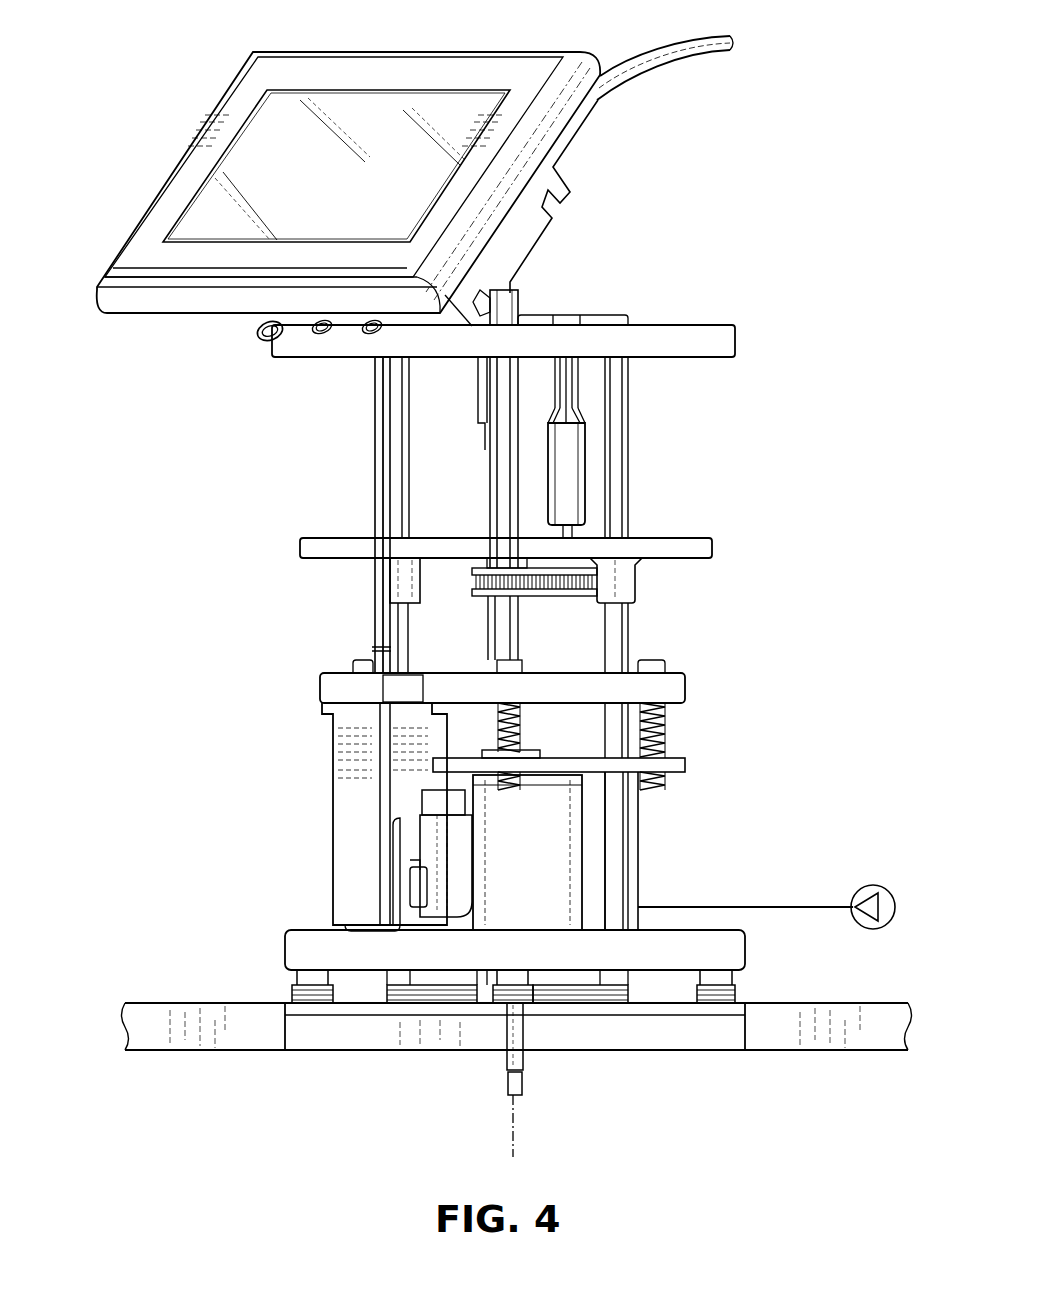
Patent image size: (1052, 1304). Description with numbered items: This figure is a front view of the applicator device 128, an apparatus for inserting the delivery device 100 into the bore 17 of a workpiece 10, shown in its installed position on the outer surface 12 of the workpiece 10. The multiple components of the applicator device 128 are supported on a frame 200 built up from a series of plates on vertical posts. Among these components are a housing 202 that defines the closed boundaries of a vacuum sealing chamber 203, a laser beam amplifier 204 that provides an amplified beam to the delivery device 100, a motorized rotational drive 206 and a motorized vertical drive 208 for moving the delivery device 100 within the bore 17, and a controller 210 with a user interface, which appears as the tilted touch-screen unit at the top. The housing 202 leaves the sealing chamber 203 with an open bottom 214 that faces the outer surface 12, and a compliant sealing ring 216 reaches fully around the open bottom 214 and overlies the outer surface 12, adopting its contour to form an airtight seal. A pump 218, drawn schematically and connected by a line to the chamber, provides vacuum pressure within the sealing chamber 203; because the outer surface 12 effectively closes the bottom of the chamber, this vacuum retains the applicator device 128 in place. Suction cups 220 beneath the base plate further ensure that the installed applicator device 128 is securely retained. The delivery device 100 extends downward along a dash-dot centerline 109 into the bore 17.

The workpiece 10 is at (140, 1000).
The outer surface 12 is at (171, 1003).
The bore 17 is at (526, 1032).
The delivery device 100 is at (506, 1062).
The central axis 109 is at (515, 1150).
The applicator device 128 is at (86, 80).
The frame 200 is at (345, 535).
The housing 202 is at (640, 859).
The vacuum sealing chamber 203 is at (600, 884).
The laser beam amplifier 204 is at (570, 845).
The motorized rotational drive 206 is at (586, 480).
The motorized vertical drive 208 is at (333, 775).
The controller 210 is at (192, 143).
The open bottom 214 is at (610, 1003).
The sealing ring 216 is at (388, 988).
The pump 218 is at (873, 885).
The suction cups 220 is at (295, 998).